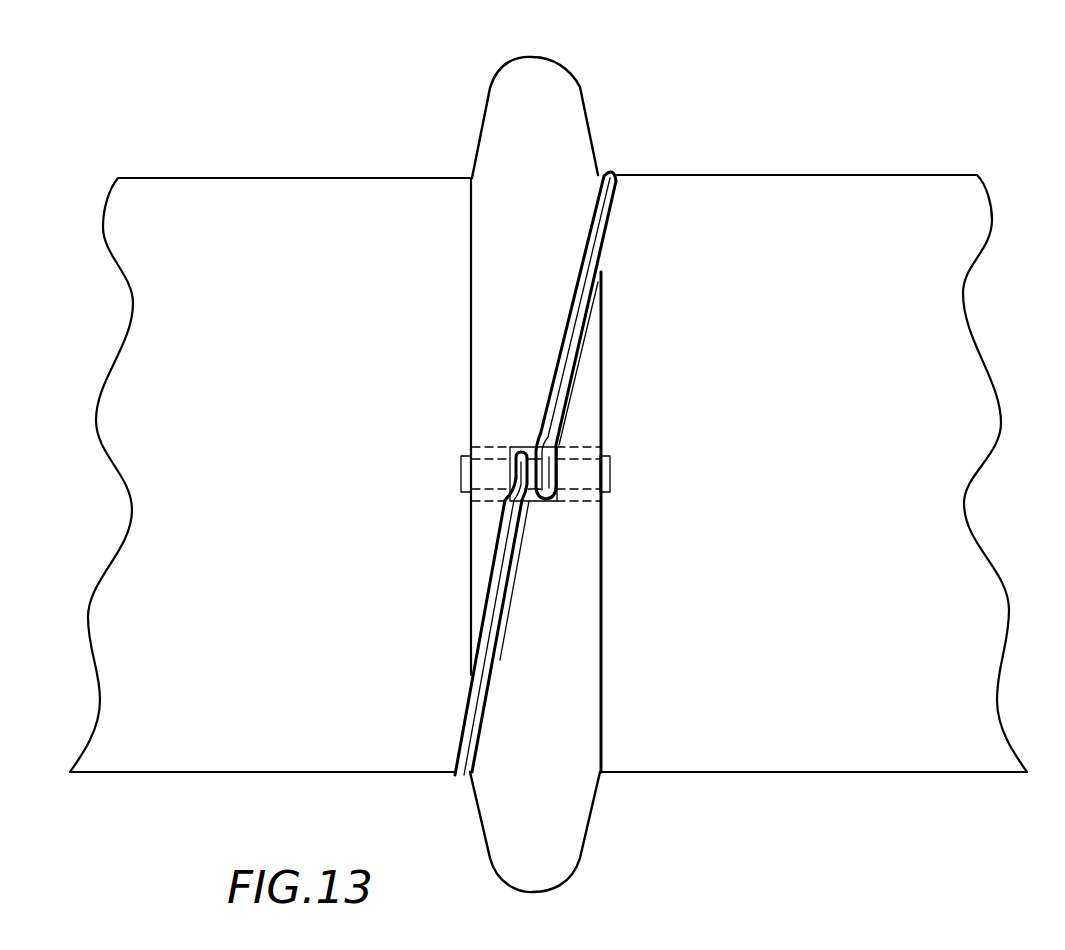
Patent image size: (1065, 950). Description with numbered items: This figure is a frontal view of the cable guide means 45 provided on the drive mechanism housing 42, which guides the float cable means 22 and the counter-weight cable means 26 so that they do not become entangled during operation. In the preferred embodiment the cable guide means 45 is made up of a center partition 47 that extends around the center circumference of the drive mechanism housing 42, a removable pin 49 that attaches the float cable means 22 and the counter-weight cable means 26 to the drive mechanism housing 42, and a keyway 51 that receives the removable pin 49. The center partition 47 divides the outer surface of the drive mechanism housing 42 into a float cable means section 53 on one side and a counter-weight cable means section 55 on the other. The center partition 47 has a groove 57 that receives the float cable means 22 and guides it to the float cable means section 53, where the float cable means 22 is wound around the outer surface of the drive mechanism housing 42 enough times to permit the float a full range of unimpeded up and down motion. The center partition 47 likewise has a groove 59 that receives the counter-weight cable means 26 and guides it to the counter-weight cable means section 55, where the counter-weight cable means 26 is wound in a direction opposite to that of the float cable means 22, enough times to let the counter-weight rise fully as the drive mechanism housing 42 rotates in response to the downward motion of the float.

The float cable means 22 is at (600, 250).
The counter-weight cable means 26 is at (467, 703).
The drive mechanism housing 42 is at (636, 90).
The cable guide means 45 is at (468, 368).
The center partition 47 is at (488, 93).
The removable pin 49 is at (610, 470).
The keyway 51 is at (493, 490).
The float cable means section 53 is at (783, 175).
The counter-weight cable means section 55 is at (270, 178).
The groove 57 is at (585, 337).
The groove 59 is at (502, 640).